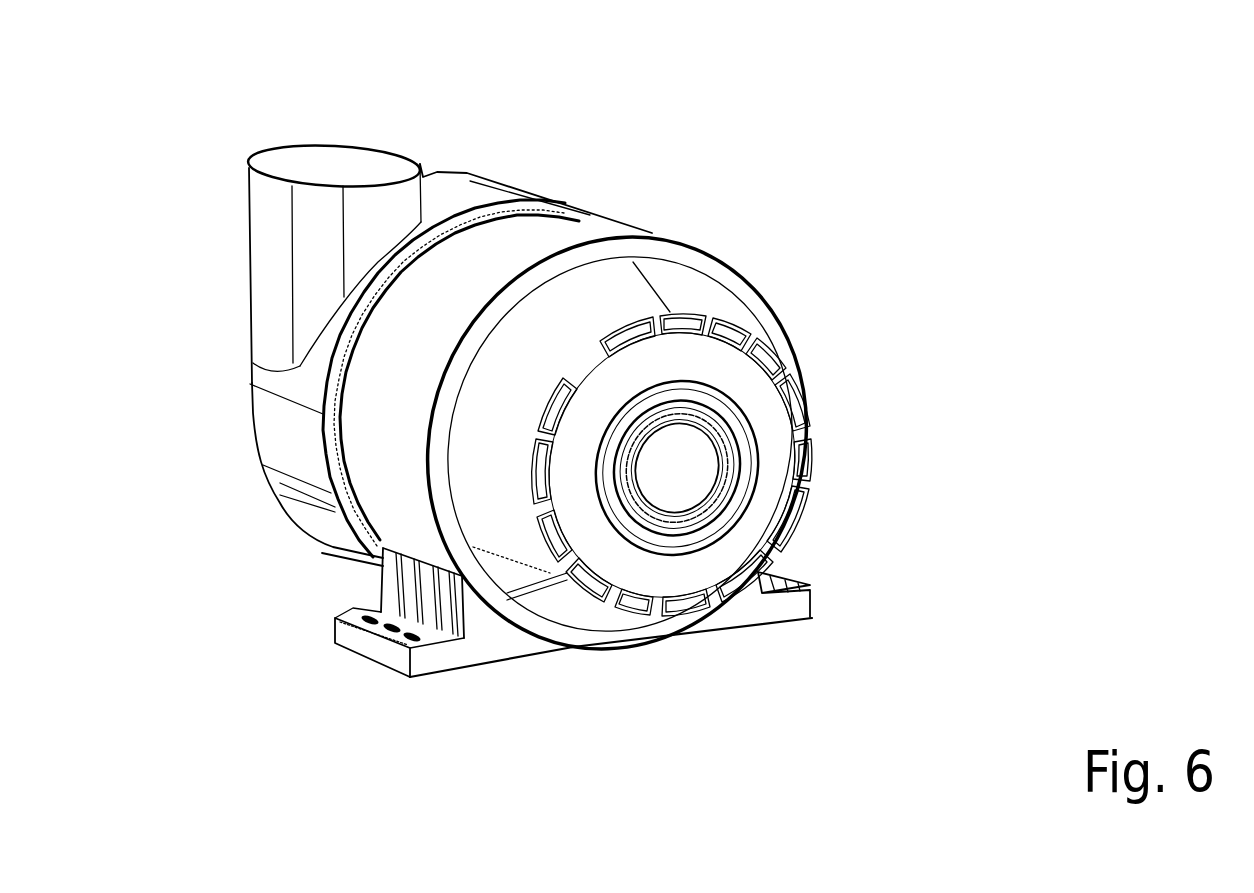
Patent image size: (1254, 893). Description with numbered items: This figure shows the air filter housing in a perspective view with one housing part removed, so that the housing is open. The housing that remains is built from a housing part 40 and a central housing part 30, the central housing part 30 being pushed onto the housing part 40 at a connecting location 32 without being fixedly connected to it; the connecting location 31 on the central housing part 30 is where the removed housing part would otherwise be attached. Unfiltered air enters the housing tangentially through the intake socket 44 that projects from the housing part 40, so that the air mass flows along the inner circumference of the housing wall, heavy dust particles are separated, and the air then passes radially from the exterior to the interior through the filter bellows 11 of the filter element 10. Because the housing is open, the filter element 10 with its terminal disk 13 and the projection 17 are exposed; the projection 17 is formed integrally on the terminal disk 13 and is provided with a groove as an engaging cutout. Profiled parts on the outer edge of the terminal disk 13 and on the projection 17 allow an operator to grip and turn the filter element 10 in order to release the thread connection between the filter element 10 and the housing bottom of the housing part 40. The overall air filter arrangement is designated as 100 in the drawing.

The pump 100 is at (968, 130).
The intake socket 44 is at (318, 173).
The housing part 40 is at (320, 540).
The connecting location 32 is at (453, 215).
The central housing part 30 is at (490, 242).
The connecting location 31 is at (563, 265).
The filter bellows 11 is at (590, 310).
The terminal disk 13 is at (758, 418).
The filter element 10 is at (740, 343).
The projection 17 is at (626, 525).